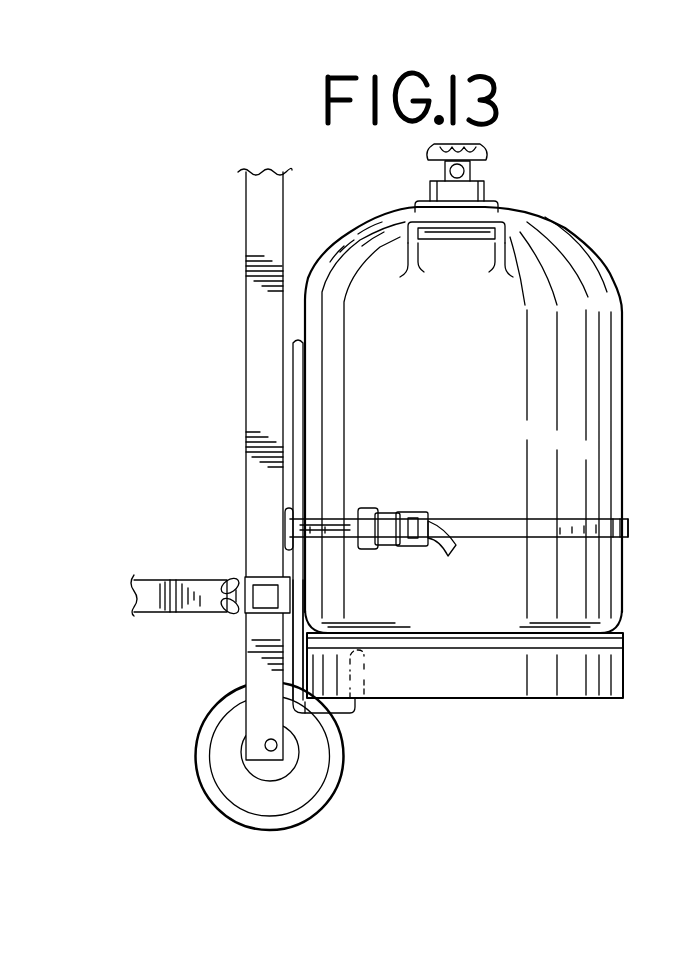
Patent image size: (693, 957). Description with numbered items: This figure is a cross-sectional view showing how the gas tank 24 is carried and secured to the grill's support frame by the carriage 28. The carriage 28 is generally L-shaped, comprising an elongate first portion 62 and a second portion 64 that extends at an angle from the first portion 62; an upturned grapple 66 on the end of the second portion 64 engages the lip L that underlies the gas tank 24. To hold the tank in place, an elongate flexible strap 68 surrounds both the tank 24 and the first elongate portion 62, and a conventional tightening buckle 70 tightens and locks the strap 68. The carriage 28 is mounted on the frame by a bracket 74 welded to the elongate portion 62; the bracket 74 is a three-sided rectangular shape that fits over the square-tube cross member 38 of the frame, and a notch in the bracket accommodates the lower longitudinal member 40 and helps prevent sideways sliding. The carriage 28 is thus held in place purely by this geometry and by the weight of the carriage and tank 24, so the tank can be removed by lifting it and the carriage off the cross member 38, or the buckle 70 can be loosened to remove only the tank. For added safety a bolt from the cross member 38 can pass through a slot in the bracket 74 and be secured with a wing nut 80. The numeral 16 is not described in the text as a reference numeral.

The upright pole 16 is at (250, 210).
The gas tank 24 is at (441, 410).
The carriage 28 is at (305, 447).
The cross member 38 is at (258, 614).
The lower longitudinal member 40 is at (152, 600).
The elongate first portion 62 is at (298, 380).
The second portion 64 is at (354, 710).
The upturned grapple 66 is at (362, 668).
The strap 68 is at (590, 530).
The tightening buckle 70 is at (414, 512).
The bracket 74 is at (265, 577).
The wing nut 80 is at (232, 614).
The lip L is at (543, 699).